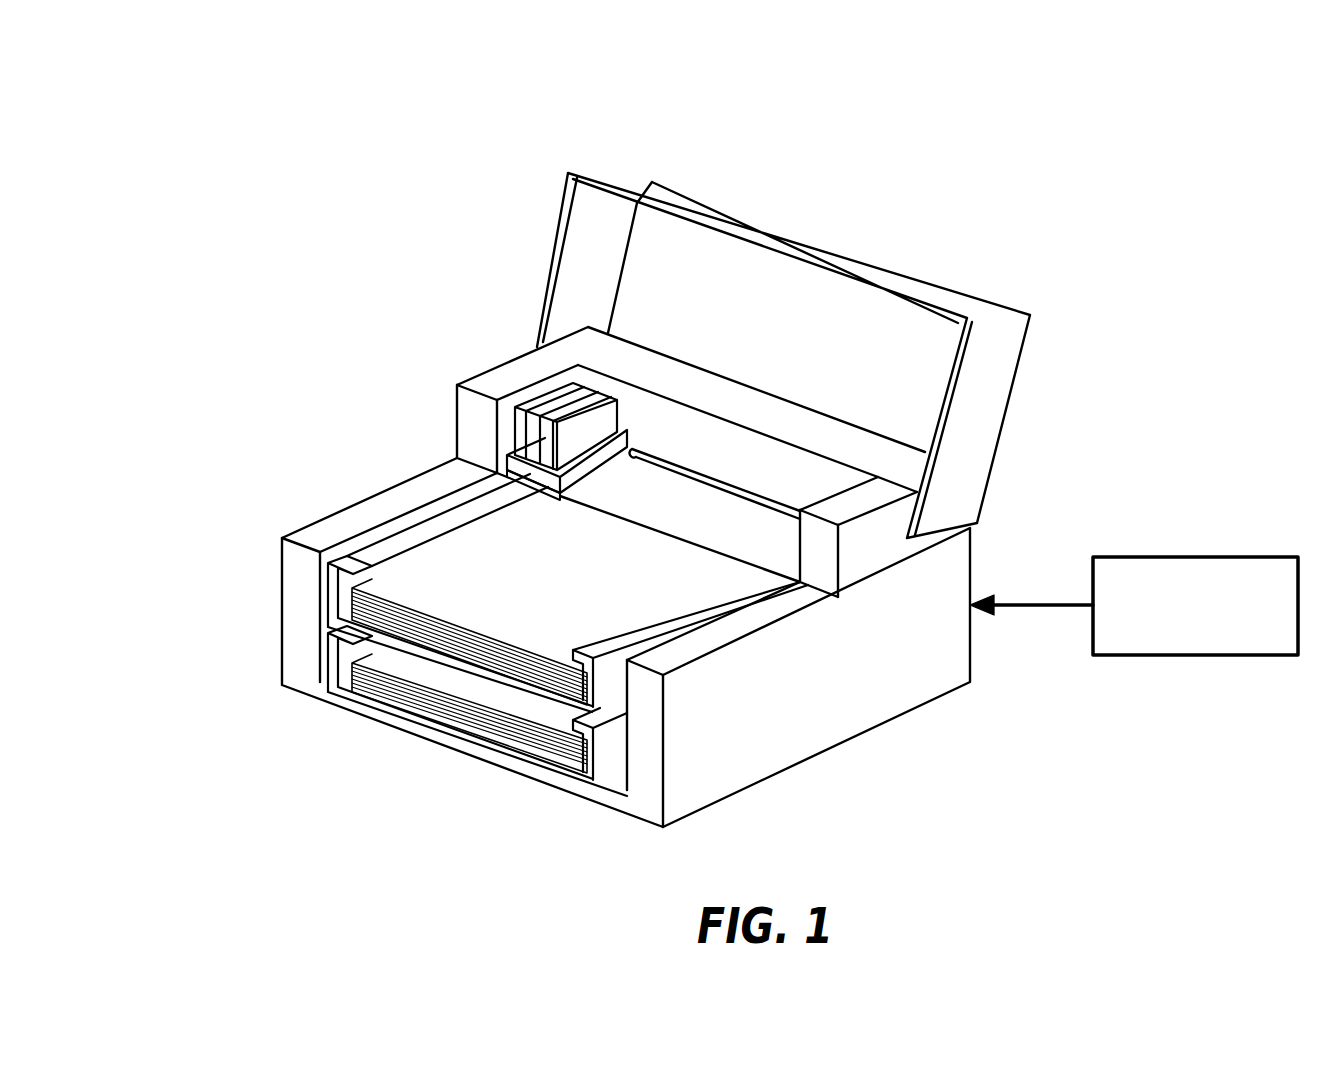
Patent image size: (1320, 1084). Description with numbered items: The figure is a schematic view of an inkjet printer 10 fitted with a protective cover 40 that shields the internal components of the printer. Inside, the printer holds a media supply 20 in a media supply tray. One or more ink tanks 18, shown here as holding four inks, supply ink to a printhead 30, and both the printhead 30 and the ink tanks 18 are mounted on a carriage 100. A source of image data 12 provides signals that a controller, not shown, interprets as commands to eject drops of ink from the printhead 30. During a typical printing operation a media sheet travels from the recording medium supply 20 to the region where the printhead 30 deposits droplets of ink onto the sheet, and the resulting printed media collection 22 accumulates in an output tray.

The inkjet printer 10 is at (1028, 194).
The source of image data 12 is at (1205, 557).
The ink tanks 18 is at (546, 400).
The media supply 20 is at (432, 670).
The printed media collection 22 is at (413, 587).
The printhead 30 is at (522, 508).
The protective cover 40 is at (1018, 370).
The carriage 100 is at (496, 492).